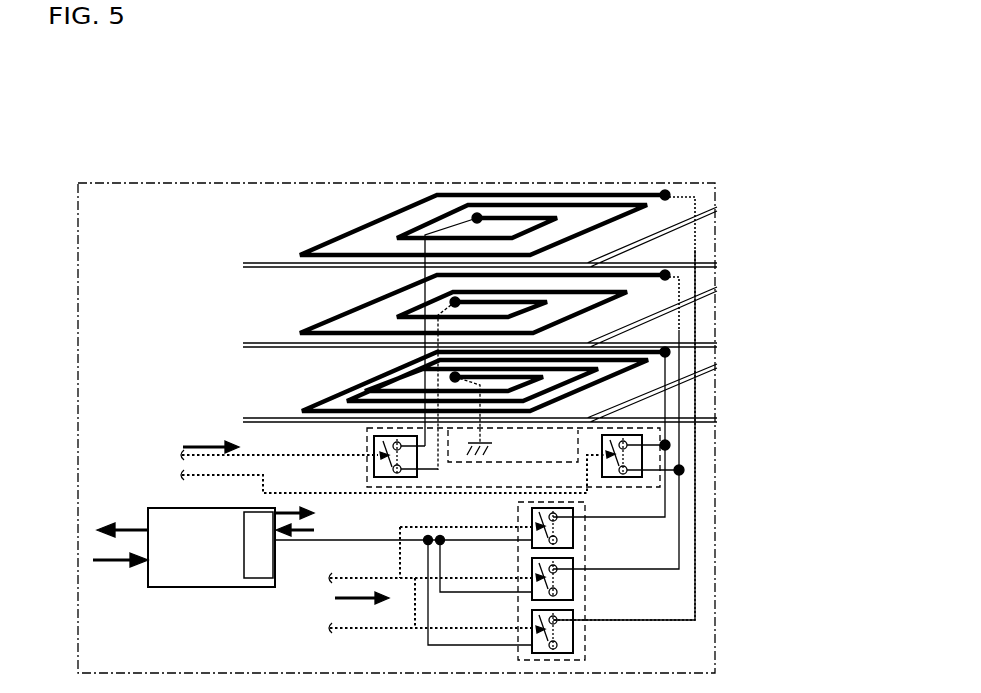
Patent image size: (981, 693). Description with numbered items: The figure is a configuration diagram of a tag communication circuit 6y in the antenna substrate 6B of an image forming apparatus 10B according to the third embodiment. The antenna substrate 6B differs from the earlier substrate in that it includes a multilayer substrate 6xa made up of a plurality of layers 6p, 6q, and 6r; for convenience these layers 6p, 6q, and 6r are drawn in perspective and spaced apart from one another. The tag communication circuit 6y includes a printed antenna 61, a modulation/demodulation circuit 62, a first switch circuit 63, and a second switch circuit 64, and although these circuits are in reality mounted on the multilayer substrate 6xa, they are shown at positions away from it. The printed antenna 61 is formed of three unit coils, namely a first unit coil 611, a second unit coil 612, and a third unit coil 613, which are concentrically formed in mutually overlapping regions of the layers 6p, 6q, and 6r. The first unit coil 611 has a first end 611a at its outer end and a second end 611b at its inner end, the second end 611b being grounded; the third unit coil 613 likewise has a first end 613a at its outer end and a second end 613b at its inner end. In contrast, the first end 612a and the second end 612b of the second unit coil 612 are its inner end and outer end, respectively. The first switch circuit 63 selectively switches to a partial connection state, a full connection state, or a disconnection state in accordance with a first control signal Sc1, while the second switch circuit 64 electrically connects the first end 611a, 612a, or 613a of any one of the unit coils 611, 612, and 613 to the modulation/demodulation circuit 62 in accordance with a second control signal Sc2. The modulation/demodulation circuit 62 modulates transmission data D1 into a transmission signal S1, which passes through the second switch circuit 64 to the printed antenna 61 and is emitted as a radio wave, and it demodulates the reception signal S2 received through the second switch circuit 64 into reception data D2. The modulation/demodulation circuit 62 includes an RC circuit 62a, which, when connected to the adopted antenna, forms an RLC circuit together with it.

The image forming apparatus 10B is at (108, 104).
The antenna substrate 6B is at (706, 146).
The printed antenna 61 is at (541, 187).
The third unit coil 613 is at (302, 253).
The first end 613a is at (667, 200).
The second end 613b is at (472, 212).
The second unit coil 612 is at (302, 331).
The first end 612a is at (451, 297).
The second end 612b is at (667, 279).
The first unit coil 611 is at (302, 408).
The first end 611a is at (667, 356).
The second end 611b is at (451, 372).
The layer 6r is at (283, 265).
The layer 6q is at (267, 346).
The layer 6p is at (283, 420).
The multilayer substrate 6xa is at (152, 300).
The first switch circuit 63 is at (363, 473).
The second switch circuit 64 is at (592, 647).
The modulation/demodulation circuit 62 is at (180, 510).
The RC circuit 62a is at (263, 581).
The tag communication circuit 6y is at (727, 520).
The first control signal Sc1 is at (392, 456).
The second control signal Sc2 is at (431, 580).
The transmission signal S1 is at (313, 508).
The reception signal S2 is at (403, 580).
The transmission data D1 is at (120, 575).
The reception data D2 is at (122, 515).